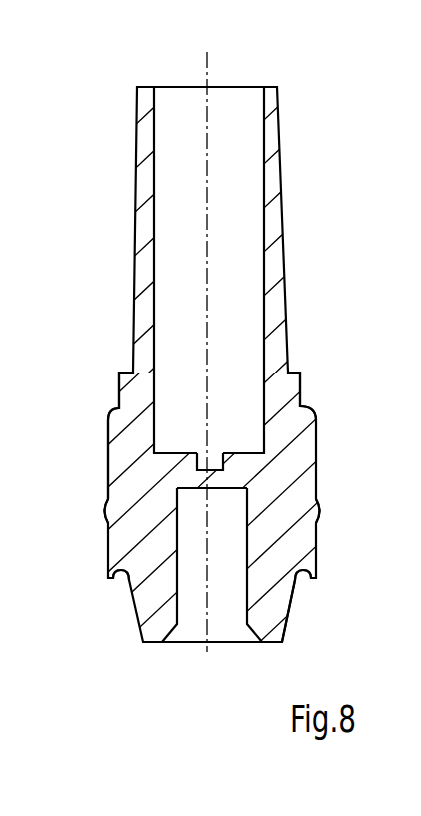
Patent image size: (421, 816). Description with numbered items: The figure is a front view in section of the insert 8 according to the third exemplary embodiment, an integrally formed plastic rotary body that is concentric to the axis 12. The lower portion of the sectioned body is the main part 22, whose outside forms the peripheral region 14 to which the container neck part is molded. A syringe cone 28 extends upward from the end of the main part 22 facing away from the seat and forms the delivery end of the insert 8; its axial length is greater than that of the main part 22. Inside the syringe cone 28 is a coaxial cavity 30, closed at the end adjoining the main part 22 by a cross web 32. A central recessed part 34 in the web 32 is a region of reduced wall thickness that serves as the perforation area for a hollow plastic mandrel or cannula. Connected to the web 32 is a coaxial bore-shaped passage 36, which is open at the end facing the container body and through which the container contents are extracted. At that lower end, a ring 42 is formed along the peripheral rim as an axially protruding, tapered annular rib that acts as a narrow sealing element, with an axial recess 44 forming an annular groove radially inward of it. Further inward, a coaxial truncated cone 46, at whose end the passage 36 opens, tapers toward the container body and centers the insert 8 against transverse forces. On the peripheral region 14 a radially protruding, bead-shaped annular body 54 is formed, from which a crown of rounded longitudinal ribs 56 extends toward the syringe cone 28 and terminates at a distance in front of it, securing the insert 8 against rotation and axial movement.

The insert 8 is at (318, 300).
The axis 12 is at (207, 63).
The peripheral region 14 is at (317, 475).
The main part 22 is at (163, 513).
The syringe cone 28 is at (273, 135).
The cavity 30 is at (232, 202).
The cross web 32 is at (203, 481).
The recessed part 34 is at (203, 487).
The passage 36 is at (178, 592).
The ring 42 is at (309, 575).
The axial recess 44 is at (122, 577).
The truncated cone 46 is at (290, 614).
The annular body 54 is at (321, 514).
The longitudinal ribs 56 is at (109, 414).